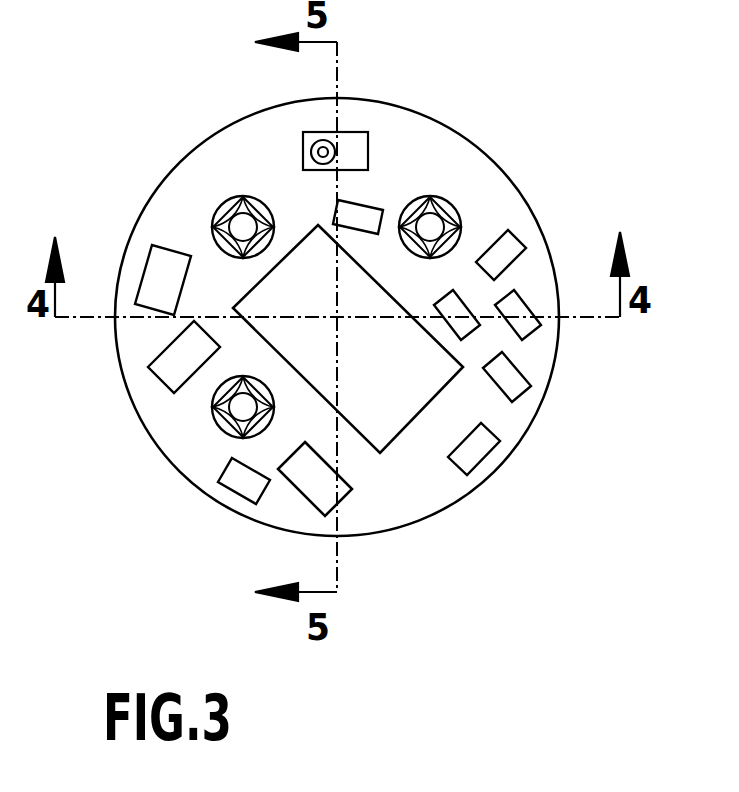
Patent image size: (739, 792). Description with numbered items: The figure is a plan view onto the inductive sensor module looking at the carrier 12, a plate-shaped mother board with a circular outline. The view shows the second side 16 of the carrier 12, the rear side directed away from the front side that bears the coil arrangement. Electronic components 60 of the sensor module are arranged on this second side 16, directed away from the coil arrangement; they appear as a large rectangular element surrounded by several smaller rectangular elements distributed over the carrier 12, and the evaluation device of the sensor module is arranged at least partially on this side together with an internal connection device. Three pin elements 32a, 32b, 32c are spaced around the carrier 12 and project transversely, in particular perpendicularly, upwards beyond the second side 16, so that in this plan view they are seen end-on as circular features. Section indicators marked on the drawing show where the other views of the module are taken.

The carrier 12 is at (462, 170).
The second side 16 is at (190, 193).
The pin element 32a is at (243, 222).
The pin element 32b is at (430, 227).
The pin element 32c is at (243, 407).
The electronic components 60 is at (375, 407).